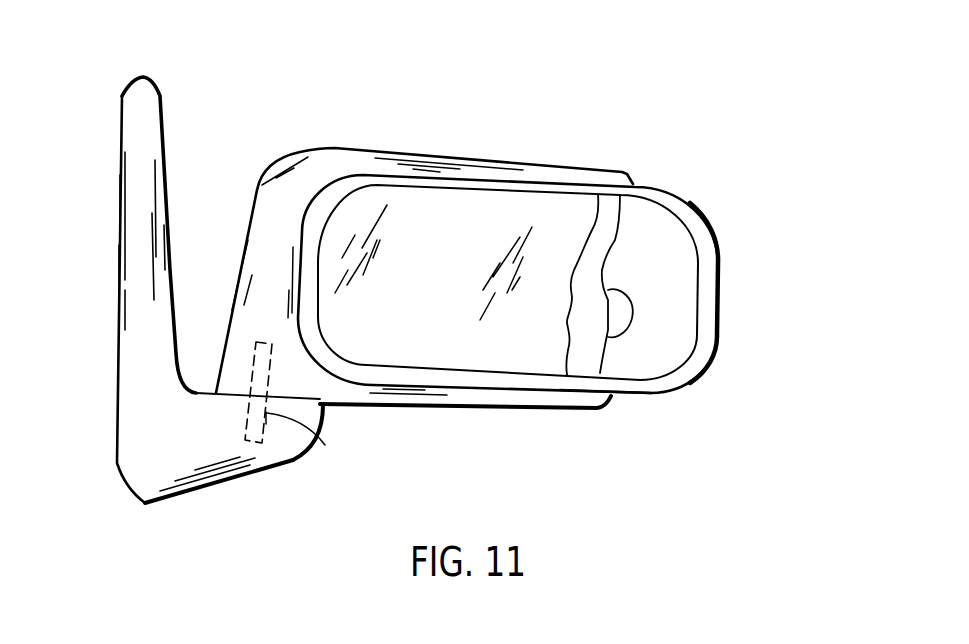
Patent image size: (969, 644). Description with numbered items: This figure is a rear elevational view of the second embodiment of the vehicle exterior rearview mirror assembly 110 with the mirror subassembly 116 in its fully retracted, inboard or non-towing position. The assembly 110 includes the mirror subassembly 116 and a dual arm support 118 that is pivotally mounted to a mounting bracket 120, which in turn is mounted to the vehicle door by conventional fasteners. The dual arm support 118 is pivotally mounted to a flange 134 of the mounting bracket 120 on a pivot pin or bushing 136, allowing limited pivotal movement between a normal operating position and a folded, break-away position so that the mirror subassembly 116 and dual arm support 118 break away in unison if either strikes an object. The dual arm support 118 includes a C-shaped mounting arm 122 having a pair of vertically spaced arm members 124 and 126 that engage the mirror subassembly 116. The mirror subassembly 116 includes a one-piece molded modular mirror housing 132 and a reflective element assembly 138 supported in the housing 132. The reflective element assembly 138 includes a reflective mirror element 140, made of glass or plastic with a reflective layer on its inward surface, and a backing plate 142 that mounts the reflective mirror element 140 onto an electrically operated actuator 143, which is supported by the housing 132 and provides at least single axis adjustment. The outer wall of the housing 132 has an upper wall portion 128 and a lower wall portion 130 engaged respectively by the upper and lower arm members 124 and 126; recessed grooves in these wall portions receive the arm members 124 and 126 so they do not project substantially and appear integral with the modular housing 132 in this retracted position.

The vehicle exterior rearview mirror assembly 110 is at (592, 95).
The mirror subassembly 116 is at (688, 190).
The dual arm support 118 is at (290, 148).
The mounting bracket 120 is at (170, 142).
The C-shaped mounting arm 122 is at (347, 148).
The upper arm member 124 is at (457, 168).
The lower arm member 126 is at (463, 412).
The upper wall portion 128 is at (648, 183).
The lower wall portion 130 is at (648, 395).
The mirror housing 132 is at (720, 253).
The flange 134 is at (282, 443).
The pivot pin or bushing 136 is at (333, 445).
The reflective element assembly 138 is at (622, 282).
The reflective mirror element 140 is at (522, 352).
The backing plate 142 is at (587, 362).
The actuator 143 is at (624, 312).